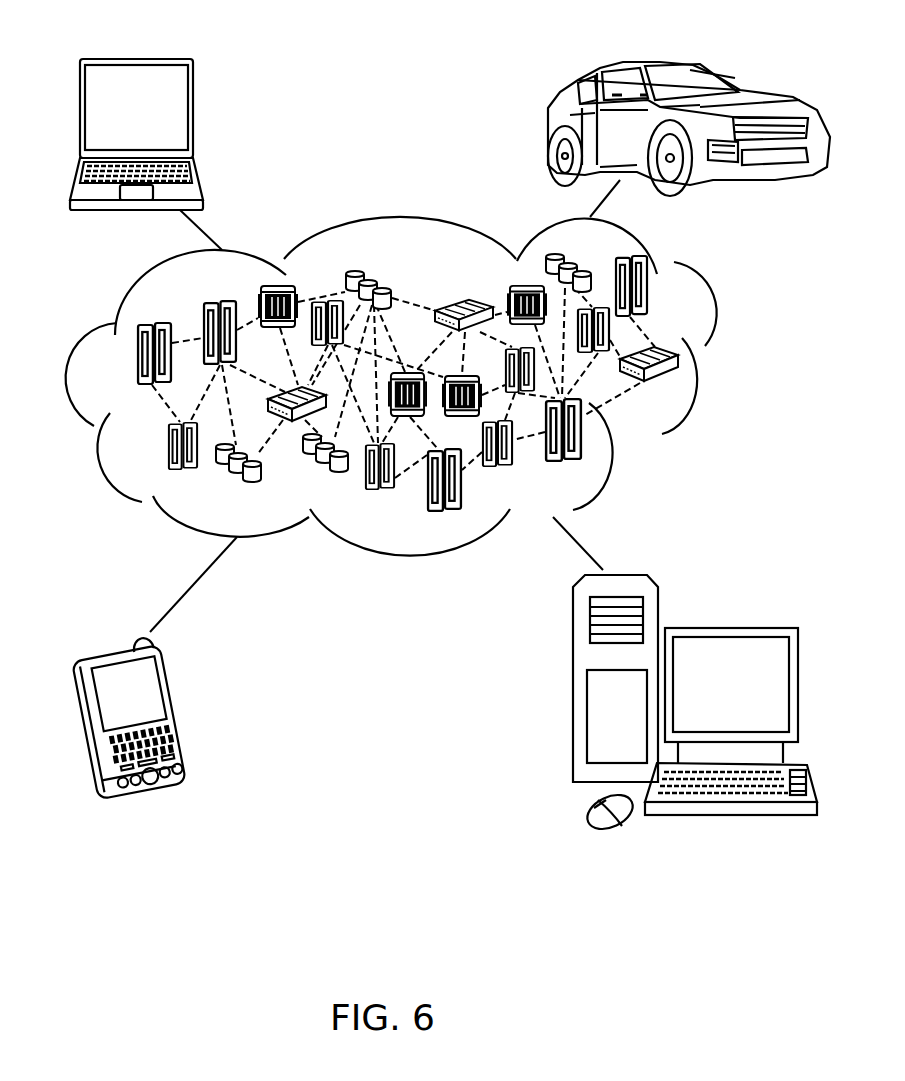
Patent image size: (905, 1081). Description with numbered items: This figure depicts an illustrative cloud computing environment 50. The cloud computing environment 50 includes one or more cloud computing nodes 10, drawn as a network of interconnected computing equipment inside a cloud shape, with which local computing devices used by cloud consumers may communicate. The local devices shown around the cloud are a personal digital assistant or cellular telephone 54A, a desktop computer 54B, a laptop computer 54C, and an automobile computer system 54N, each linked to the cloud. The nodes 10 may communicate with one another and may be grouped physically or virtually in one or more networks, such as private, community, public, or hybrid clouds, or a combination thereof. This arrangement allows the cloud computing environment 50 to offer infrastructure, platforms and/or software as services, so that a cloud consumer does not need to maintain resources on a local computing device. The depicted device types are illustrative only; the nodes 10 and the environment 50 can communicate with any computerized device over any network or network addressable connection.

The cloud computing node 10 is at (686, 399).
The cloud computing environment 50 is at (728, 363).
The personal digital assistant or cellular telephone 54A is at (185, 713).
The desktop computer 54B is at (727, 627).
The laptop computer 54C is at (193, 110).
The automobile computer system 54N is at (548, 128).